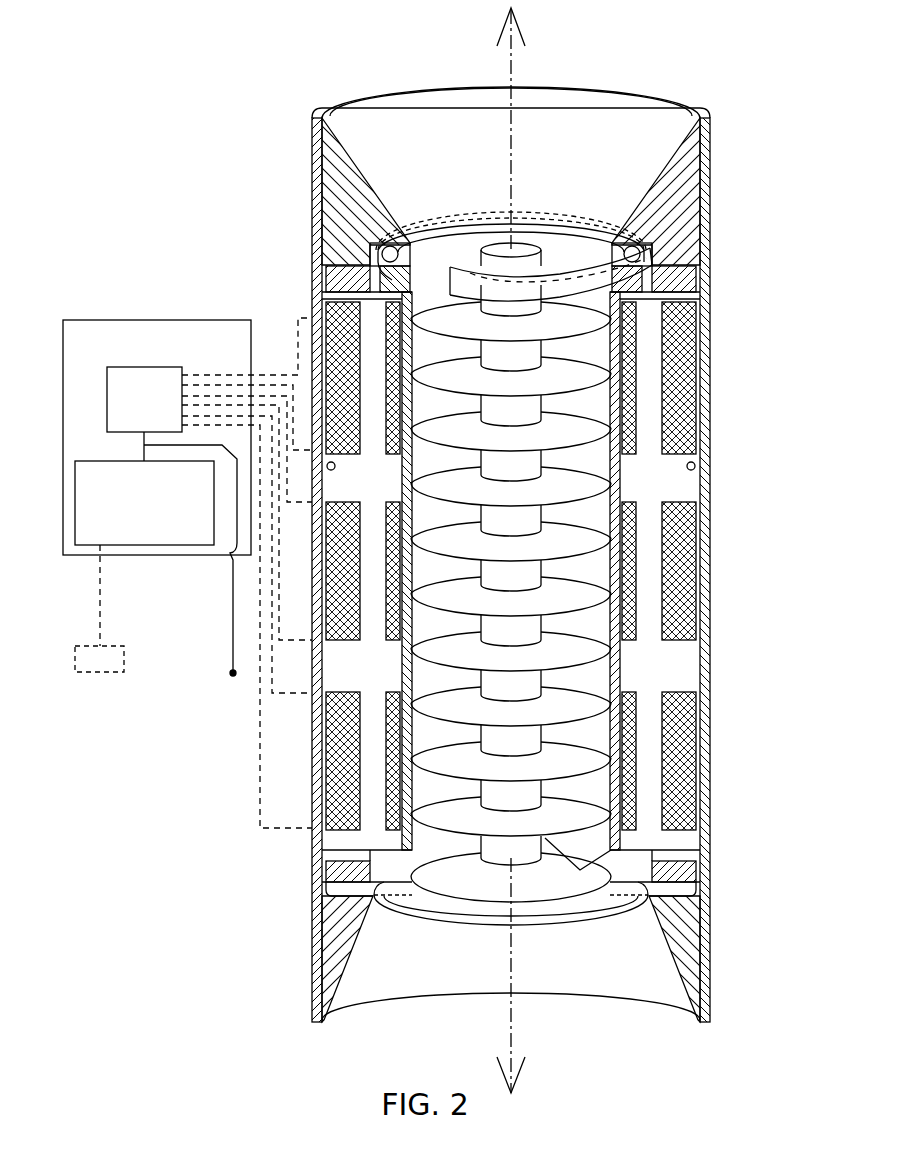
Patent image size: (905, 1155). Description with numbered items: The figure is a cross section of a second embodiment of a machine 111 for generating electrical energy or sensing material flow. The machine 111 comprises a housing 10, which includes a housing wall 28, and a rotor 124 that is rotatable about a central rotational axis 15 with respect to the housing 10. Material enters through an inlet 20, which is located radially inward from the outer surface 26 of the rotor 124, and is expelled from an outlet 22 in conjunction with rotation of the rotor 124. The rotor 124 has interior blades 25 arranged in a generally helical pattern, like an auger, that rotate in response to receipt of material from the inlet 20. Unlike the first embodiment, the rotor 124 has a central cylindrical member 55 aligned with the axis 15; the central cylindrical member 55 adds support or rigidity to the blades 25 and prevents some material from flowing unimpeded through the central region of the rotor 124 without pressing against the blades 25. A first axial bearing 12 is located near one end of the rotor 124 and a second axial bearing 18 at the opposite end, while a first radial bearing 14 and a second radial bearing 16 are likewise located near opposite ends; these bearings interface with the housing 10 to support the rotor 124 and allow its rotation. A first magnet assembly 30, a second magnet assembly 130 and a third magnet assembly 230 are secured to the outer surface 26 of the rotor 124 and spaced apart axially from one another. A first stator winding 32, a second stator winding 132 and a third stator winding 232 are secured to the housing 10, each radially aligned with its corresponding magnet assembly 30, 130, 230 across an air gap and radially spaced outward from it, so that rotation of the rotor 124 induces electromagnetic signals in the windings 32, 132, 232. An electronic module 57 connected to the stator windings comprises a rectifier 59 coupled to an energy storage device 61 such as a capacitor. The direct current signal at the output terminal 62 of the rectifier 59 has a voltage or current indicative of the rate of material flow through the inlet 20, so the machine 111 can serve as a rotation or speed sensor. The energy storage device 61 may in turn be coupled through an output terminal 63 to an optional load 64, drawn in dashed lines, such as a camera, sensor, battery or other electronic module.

The housing 10 is at (678, 195).
The first axial bearing 12 is at (570, 222).
The first radial bearing 14 is at (326, 278).
The central rotational axis 15 is at (520, 50).
The second radial bearing 16 is at (336, 874).
The second axial bearing 18 is at (445, 905).
The inlet 20 is at (430, 133).
The outlet 22 is at (573, 957).
The interior blades 25 is at (415, 378).
The outer surface 26 is at (402, 455).
The housing wall 28 is at (328, 467).
The first magnet assembly 30 is at (400, 560).
The first stator winding 32 is at (345, 557).
The central cylindrical member 55 is at (525, 356).
The electronic module 57 is at (143, 320).
The rectifier 59 is at (107, 398).
The energy storage device 61 is at (105, 461).
The output terminal 62 is at (233, 616).
The output terminal 63 is at (100, 612).
The optional load 64 is at (98, 672).
The machine 111 is at (733, 672).
The rotor 124 is at (437, 310).
The second magnet assembly 130 is at (402, 775).
The second stator winding 132 is at (345, 772).
The third magnet assembly 230 is at (393, 395).
The third stator winding 232 is at (340, 302).